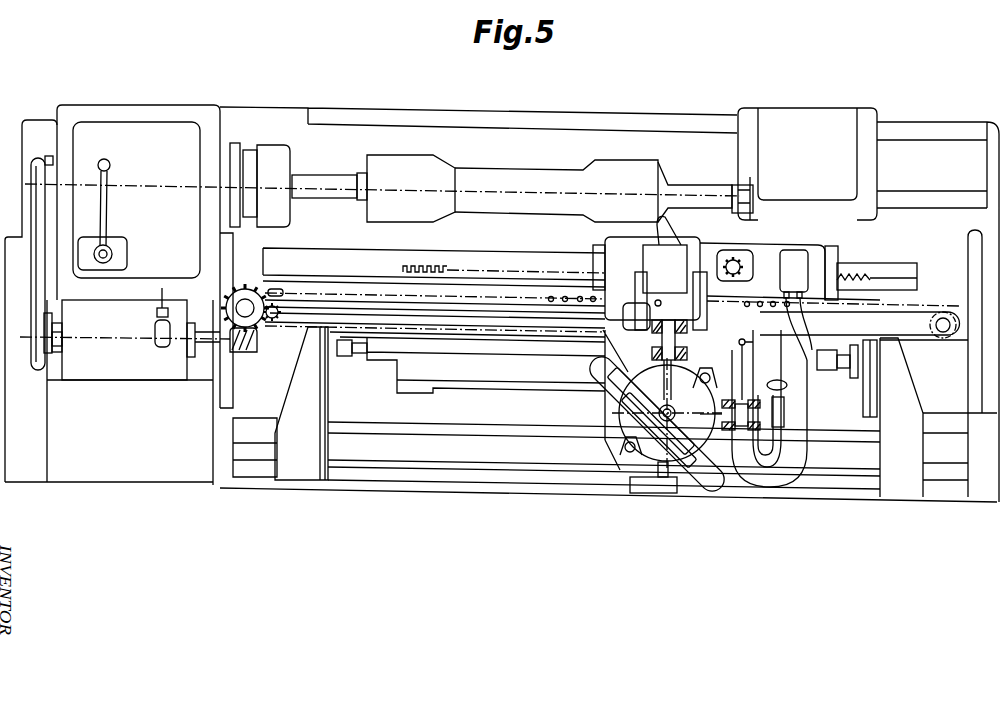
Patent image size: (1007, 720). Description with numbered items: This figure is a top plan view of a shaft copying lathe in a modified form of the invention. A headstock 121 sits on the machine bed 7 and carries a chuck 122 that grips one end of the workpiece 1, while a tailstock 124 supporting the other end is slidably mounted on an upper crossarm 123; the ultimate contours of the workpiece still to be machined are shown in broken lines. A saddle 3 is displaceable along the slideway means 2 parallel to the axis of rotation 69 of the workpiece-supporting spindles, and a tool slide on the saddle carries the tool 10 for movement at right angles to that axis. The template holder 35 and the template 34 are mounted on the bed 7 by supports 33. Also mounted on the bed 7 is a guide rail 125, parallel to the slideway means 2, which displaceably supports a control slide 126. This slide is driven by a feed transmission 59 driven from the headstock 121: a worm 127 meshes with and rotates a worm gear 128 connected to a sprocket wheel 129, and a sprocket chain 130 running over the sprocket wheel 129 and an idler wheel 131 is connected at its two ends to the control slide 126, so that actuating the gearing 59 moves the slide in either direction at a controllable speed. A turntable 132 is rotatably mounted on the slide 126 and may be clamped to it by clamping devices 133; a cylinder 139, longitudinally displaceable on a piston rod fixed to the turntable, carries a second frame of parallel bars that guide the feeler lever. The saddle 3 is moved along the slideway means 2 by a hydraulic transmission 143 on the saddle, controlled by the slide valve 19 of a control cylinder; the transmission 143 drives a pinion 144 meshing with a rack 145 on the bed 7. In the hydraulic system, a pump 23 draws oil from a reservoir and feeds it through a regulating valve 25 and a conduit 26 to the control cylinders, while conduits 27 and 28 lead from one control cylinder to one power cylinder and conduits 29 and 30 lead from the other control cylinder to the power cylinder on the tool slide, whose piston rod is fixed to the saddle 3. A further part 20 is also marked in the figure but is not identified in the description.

The workpiece 1 is at (397, 153).
The slideway means 2 is at (313, 247).
The saddle 3 is at (827, 243).
The machine bed 7 is at (223, 473).
The tool 10 is at (668, 238).
The slide valve 19 is at (748, 400).
The bearing 20 is at (665, 328).
The pump 23 is at (783, 387).
The regulating valve 25 is at (777, 413).
The conduit 26 is at (757, 342).
The conduit 27 is at (760, 463).
The conduit 28 is at (798, 468).
The conduit 29 is at (622, 305).
The conduit 30 is at (607, 332).
The supports 33 is at (307, 417).
The template 34 is at (505, 380).
The template holder 35 is at (467, 353).
The feed transmission 59 is at (118, 367).
The axis of rotation 69 is at (492, 187).
The headstock 121 is at (132, 105).
The chuck 122 is at (267, 147).
The upper crossarm 123 is at (512, 110).
The tailstock 124 is at (807, 107).
The guide rail 125 is at (968, 327).
The control slide 126 is at (602, 350).
The worm 127 is at (245, 353).
The worm gear 128 is at (248, 282).
The sprocket wheel 129 is at (279, 311).
The sprocket chain 130 is at (274, 289).
The idler wheel 131 is at (935, 339).
The turntable 132 is at (643, 457).
The clamping devices 133 is at (628, 450).
The cylinder 139 is at (672, 463).
The hydraulic transmission 143 is at (798, 248).
The pinion 144 is at (733, 253).
The rack 145 is at (872, 277).